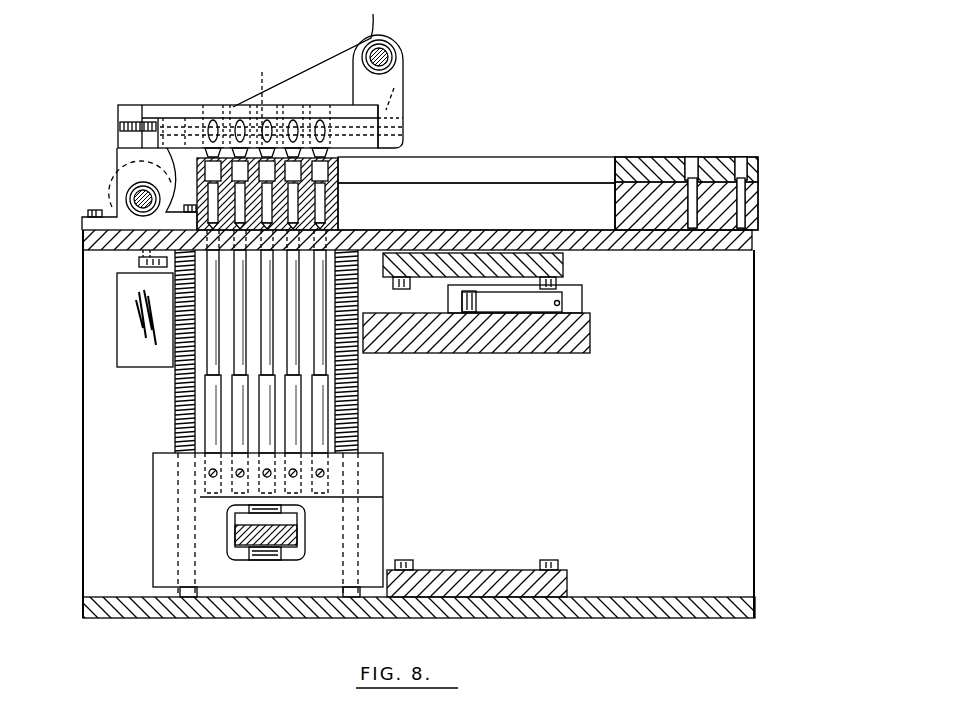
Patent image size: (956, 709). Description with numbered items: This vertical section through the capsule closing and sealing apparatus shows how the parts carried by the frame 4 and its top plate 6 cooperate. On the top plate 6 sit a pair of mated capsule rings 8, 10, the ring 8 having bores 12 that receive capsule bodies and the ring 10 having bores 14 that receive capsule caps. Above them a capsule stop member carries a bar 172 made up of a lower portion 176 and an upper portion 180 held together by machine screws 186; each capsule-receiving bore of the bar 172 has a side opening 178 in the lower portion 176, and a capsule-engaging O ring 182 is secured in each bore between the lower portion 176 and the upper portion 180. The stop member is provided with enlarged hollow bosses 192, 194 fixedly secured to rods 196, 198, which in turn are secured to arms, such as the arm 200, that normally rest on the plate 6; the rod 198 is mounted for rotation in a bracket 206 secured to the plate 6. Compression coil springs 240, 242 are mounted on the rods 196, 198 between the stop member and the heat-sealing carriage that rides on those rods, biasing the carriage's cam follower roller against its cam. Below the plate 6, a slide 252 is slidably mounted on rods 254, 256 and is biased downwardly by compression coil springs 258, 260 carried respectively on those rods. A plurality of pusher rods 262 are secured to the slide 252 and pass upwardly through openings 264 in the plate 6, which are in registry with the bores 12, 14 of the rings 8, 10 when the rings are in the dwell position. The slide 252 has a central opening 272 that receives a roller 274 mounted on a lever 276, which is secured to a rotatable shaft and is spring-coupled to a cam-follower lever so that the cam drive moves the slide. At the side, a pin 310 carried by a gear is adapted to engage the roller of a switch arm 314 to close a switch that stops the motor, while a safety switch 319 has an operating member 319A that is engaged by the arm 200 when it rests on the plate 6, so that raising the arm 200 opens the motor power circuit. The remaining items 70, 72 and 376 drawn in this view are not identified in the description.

The frame 4 is at (664, 421).
The top plate 6 is at (690, 252).
The capsule ring 8 is at (760, 210).
The capsule ring 10 is at (757, 173).
The bores 12 is at (328, 212).
The bores 14 is at (340, 174).
The support block 70 is at (578, 262).
The base block 72 is at (538, 550).
The bar 172 is at (293, 106).
The lower portion 176 is at (152, 132).
The side opening 178 is at (238, 126).
The upper portion 180 is at (207, 110).
The O ring 182 is at (269, 97).
The machine screws 186 is at (179, 104).
The hollow boss 192 is at (396, 82).
The hollow boss 194 is at (126, 180).
The rod 196 is at (384, 52).
The rod 198 is at (134, 199).
The arm 200 is at (313, 68).
The bracket 206 is at (86, 229).
The compression coil spring 240 is at (312, 53).
The compression coil spring 242 is at (140, 217).
The slide 252 is at (287, 584).
The rod 254 is at (362, 520).
The rod 256 is at (178, 518).
The compression coil spring 258 is at (362, 405).
The compression coil spring 260 is at (178, 428).
The pusher rods 262 is at (242, 350).
The openings 264 is at (352, 236).
The central opening 272 is at (236, 533).
The roller 274 is at (252, 548).
The lever 276 is at (295, 535).
The pin 310 is at (467, 298).
The switch arm 314 is at (553, 303).
The safety switch 319 is at (128, 317).
The operating member 319A is at (172, 274).
The slide frame 376 is at (582, 296).